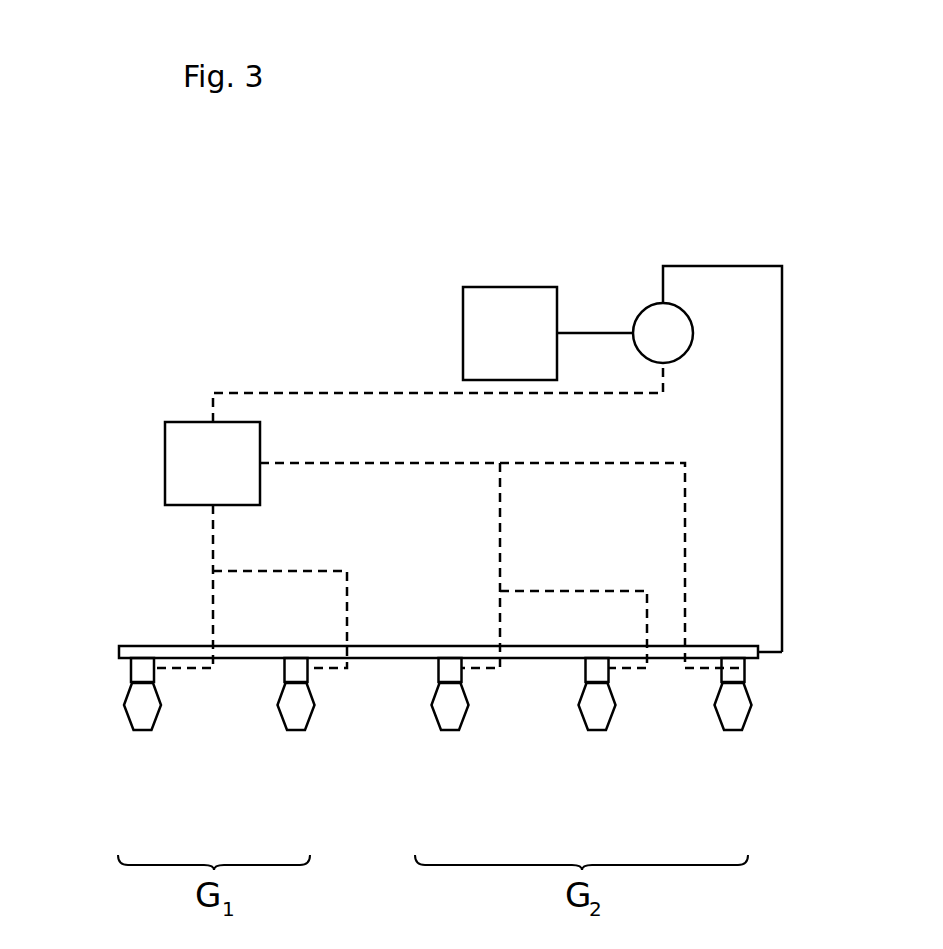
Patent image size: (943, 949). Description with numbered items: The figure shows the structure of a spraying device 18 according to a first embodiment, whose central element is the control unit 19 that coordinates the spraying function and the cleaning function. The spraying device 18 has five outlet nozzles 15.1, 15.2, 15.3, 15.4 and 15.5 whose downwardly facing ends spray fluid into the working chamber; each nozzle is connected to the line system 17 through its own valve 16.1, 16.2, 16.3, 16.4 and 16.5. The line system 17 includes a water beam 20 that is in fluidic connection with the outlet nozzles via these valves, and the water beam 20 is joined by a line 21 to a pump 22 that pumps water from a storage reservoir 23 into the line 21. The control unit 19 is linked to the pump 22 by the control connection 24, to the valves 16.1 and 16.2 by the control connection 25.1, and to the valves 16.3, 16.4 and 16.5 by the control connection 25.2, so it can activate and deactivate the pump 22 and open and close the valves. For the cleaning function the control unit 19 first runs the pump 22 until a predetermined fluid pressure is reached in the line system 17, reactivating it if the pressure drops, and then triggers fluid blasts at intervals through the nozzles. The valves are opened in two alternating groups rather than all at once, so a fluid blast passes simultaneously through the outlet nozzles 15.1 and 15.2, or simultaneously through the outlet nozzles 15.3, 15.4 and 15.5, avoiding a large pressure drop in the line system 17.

The spraying device 18 is at (514, 152).
The control unit 19 is at (202, 433).
The water beam 20 is at (123, 650).
The line 21 is at (700, 266).
The pump 22 is at (663, 327).
The storage reservoir 23 is at (475, 303).
The control connection 24 is at (280, 392).
The control connection 25.1 is at (213, 543).
The control connection 25.2 is at (460, 463).
The line system 17 is at (782, 655).
The valve 16.1 is at (142, 669).
The valve 16.2 is at (297, 670).
The valve 16.3 is at (452, 667).
The valve 16.4 is at (597, 669).
The valve 16.5 is at (732, 670).
The outlet nozzle 15.1 is at (145, 710).
The outlet nozzle 15.2 is at (299, 717).
The outlet nozzle 15.3 is at (451, 717).
The outlet nozzle 15.4 is at (597, 717).
The outlet nozzle 15.5 is at (735, 717).